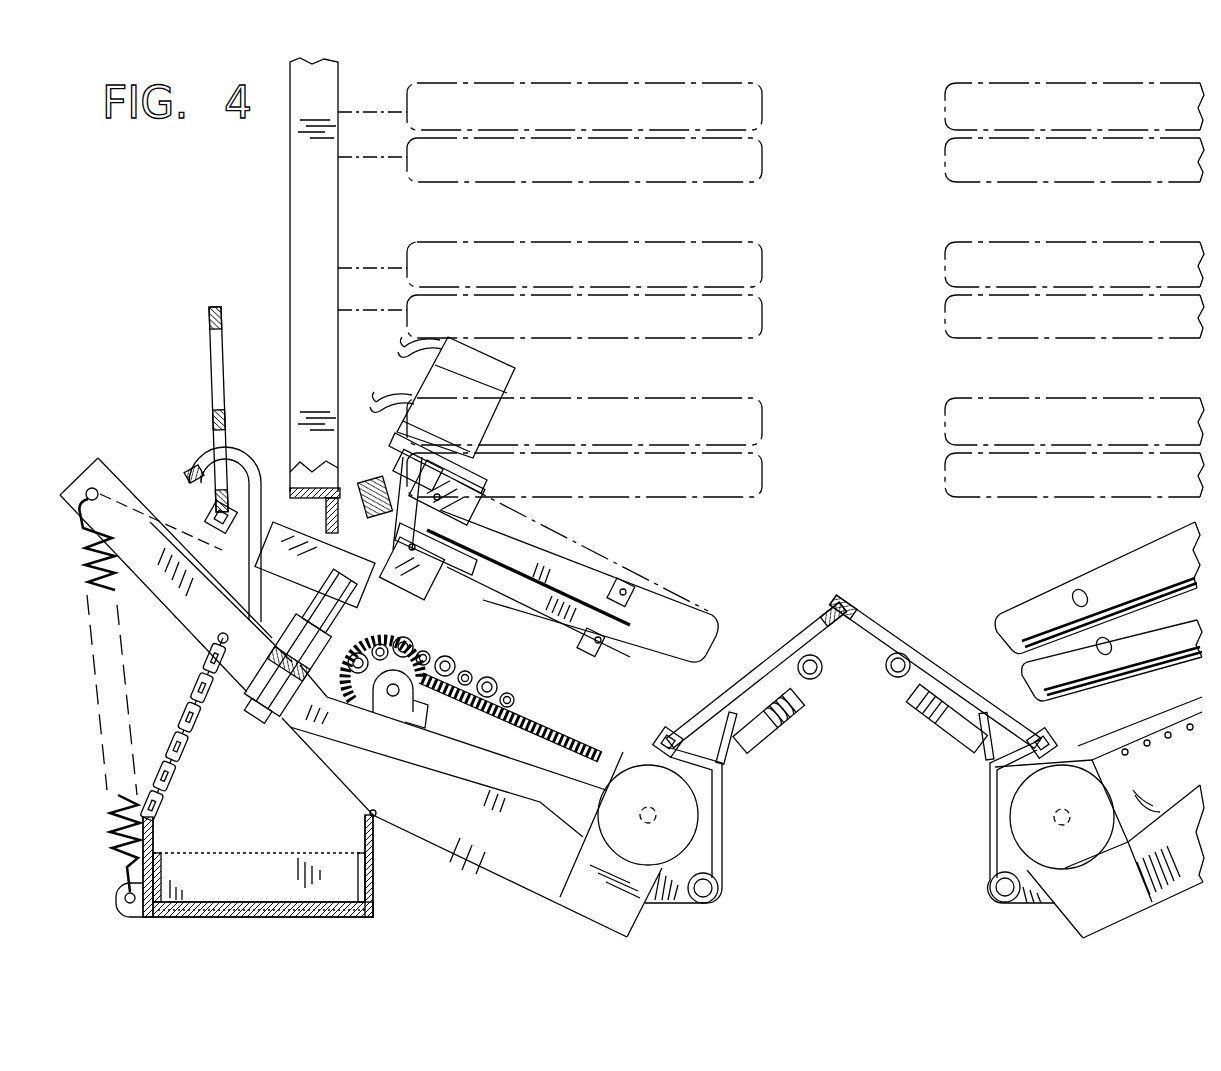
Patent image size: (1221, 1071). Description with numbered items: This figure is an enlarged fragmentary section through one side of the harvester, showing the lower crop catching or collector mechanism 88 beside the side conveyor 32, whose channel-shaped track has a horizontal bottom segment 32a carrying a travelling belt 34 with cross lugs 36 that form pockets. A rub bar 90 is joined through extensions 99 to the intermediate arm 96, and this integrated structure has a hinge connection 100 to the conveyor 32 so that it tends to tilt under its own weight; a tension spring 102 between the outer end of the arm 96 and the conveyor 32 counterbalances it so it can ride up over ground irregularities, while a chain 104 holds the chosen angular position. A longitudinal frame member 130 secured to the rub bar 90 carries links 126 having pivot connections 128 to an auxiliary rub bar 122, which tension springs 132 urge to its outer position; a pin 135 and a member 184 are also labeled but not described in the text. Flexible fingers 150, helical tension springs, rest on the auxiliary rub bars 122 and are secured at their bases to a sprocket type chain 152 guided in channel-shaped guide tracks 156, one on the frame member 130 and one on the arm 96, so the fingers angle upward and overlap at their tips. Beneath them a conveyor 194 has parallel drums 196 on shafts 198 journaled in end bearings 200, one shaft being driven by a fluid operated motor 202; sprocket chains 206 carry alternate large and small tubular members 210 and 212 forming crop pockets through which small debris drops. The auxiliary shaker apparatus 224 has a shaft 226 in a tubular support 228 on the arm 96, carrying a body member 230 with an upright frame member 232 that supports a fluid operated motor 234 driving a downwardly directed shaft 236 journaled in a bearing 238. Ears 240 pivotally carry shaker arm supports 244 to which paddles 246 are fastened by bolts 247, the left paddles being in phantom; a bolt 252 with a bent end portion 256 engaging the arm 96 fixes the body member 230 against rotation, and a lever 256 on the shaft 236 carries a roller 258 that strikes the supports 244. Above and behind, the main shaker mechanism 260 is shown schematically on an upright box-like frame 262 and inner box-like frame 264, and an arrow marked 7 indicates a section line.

The section line 7 is at (147, 362).
The conveyor 32 is at (373, 890).
The horizontal bottom segment 32a is at (365, 858).
The travelling belt 34 is at (246, 902).
The cross lugs 36 is at (158, 856).
The lower crop catching mechanism 88 is at (928, 756).
The rub bar 90 is at (716, 893).
The intermediate arm 96 is at (193, 613).
The extensions 99 is at (681, 901).
The hinge connection 100 is at (372, 814).
The tension spring 102 is at (84, 566).
The chain 104 is at (187, 707).
The auxiliary rub bar 122 is at (821, 672).
The links 126 is at (860, 718).
The pivot connections 128 is at (678, 728).
The longitudinal frame member 130 is at (722, 840).
The tension springs 132 is at (912, 708).
The pin 135 is at (731, 752).
The flexible fingers 150 is at (212, 337).
The sprocket type chain 152 is at (210, 520).
The guide tracks 156 is at (212, 500).
The hook 184 is at (237, 447).
The conveyor 194 is at (468, 664).
The drums 196 is at (425, 698).
The shafts 198 is at (357, 653).
The end bearings 200 is at (348, 663).
The fluid operated motor 202 is at (620, 795).
The sprocket chains 206 is at (496, 722).
The large tubular members 210 is at (412, 645).
The small tubular members 212 is at (507, 692).
The auxiliary shaker apparatus 224 is at (970, 548).
The shaft 226 is at (257, 704).
The tubular support 228 is at (275, 706).
The body member 230 is at (410, 594).
The upright frame member 232 is at (489, 483).
The fluid operated motor 234 is at (440, 375).
The downwardly directed shaft 236 is at (405, 492).
The bearing 238 is at (380, 644).
The inwardly directed ears 240 is at (470, 565).
The shaker arm supports 244 is at (579, 590).
The arms or paddles 246 is at (702, 610).
The bolts 247 is at (1098, 640).
The bolt 252 is at (173, 520).
The lever 256 is at (90, 490).
The roller 258 is at (297, 466).
The main shaker mechanism 260 is at (944, 108).
The box-like frame 262 is at (290, 308).
The inner box-like frame 264 is at (290, 232).